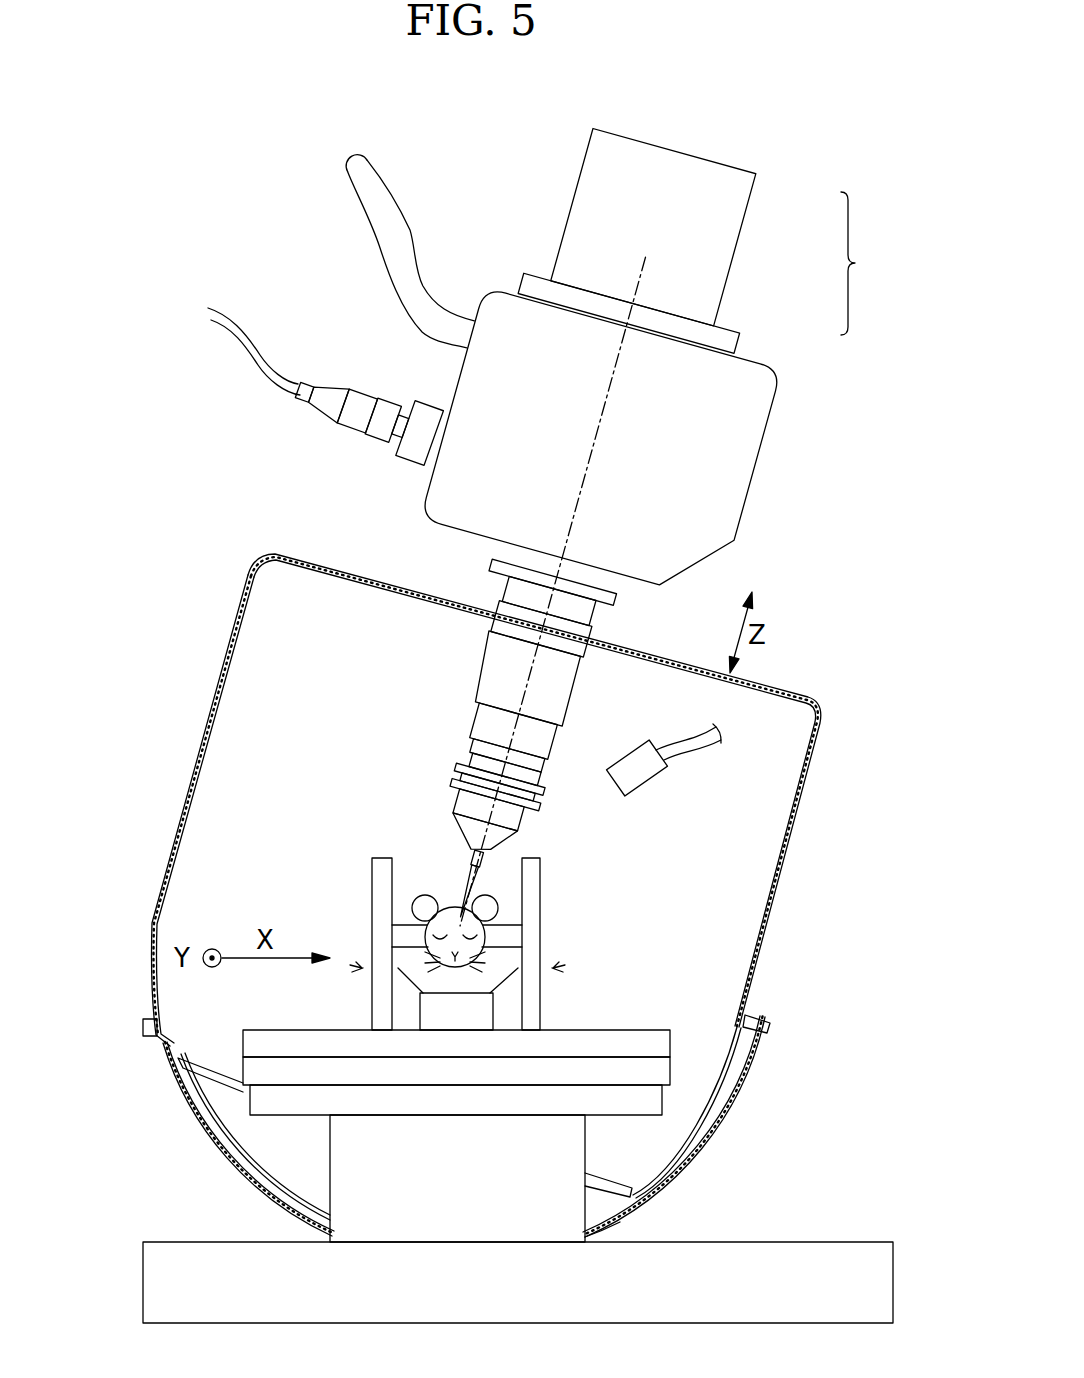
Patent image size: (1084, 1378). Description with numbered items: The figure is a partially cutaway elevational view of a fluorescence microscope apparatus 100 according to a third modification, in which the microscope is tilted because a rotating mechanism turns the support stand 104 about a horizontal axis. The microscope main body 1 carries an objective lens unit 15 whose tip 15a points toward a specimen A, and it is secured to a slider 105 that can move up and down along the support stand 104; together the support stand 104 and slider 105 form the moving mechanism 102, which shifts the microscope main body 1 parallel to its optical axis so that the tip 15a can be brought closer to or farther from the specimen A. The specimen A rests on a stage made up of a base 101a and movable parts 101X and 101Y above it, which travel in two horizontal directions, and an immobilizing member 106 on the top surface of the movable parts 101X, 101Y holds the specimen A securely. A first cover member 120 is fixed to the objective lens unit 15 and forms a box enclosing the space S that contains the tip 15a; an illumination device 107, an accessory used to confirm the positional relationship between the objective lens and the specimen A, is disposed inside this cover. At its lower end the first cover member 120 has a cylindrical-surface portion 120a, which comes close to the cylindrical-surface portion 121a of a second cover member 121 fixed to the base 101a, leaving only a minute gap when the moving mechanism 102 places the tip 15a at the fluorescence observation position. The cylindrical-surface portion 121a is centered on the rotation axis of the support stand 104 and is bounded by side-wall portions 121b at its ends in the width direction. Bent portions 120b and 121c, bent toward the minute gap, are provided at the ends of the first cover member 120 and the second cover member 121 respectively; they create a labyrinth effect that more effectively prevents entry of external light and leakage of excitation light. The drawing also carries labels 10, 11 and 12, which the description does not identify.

The fluorescence microscope apparatus 100 is at (806, 165).
The moving mechanism 102 is at (873, 263).
The support stand 104 is at (722, 243).
The slider 105 is at (733, 345).
The microscope main body 1 is at (398, 514).
The hose 12 is at (398, 237).
The cable 10 is at (258, 352).
The connector 11 is at (330, 380).
The objective lens unit 15 is at (530, 817).
The tip 15a is at (440, 912).
The illumination device 107 is at (652, 780).
The space S is at (270, 628).
The first cover member 120 is at (810, 797).
The cylindrical-surface portion 120a is at (167, 1042).
The bent portion 120b is at (180, 1067).
The second cover member 121 is at (713, 1133).
The cylindrical-surface portion 121a is at (667, 1190).
The side-wall portion 121b is at (602, 1207).
The bent portion 121c is at (150, 1020).
The immobilizing member 106 is at (540, 875).
The specimen A is at (420, 992).
The movable part 101X is at (652, 1027).
The movable part 101Y is at (672, 1062).
The base 101a is at (840, 1242).